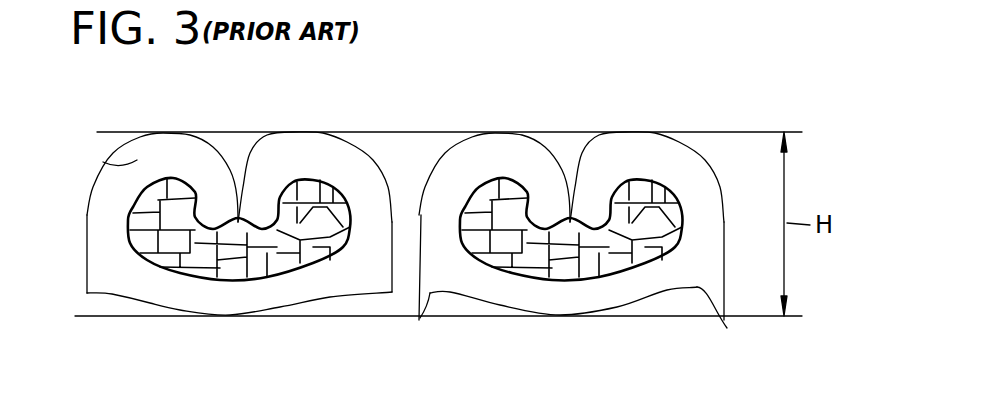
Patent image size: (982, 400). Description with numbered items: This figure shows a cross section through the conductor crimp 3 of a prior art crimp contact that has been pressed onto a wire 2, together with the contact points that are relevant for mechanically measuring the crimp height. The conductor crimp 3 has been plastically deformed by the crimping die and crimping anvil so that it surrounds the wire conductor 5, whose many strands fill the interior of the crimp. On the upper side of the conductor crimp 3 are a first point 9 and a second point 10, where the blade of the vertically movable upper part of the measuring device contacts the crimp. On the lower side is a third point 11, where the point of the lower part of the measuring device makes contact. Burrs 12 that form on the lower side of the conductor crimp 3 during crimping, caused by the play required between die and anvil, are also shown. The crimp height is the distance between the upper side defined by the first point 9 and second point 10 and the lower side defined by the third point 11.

The wire 2 is at (788, 9).
The conductor crimp 3 is at (105, 163).
The wire conductor 5 is at (261, 257).
The first point 9 is at (172, 131).
The second point 10 is at (315, 131).
The third point 11 is at (236, 317).
The burrs 12 is at (419, 318).